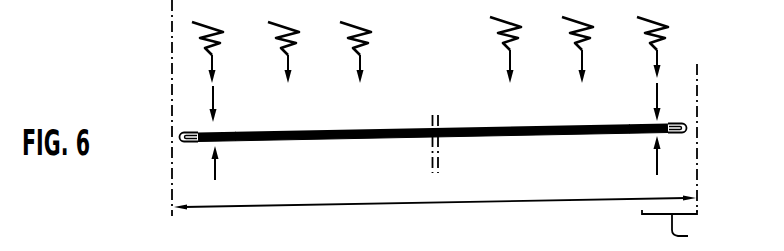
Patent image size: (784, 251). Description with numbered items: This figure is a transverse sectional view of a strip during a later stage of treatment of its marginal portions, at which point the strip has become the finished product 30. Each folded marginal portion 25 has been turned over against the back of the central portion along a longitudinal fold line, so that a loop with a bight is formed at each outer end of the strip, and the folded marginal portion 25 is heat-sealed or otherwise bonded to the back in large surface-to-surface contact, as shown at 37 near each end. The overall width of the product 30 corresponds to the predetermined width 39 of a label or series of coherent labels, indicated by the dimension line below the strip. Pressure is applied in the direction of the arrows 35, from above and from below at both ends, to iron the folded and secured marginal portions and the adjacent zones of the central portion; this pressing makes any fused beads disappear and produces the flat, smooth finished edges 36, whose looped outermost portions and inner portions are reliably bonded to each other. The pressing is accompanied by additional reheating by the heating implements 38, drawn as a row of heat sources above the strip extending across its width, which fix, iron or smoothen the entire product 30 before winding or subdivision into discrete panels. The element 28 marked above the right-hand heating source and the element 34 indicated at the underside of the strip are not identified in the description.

The folded marginal portion 25 is at (664, 122).
The radiation 28 is at (652, 39).
The finished product 30 is at (386, 108).
The underside of strip 34 is at (367, 139).
The arrows 35 is at (214, 100).
The finished edges 36 is at (677, 230).
The surface-to-surface contact 37 is at (232, 133).
The heating implements 38 is at (277, 42).
The predetermined width 39 is at (475, 203).